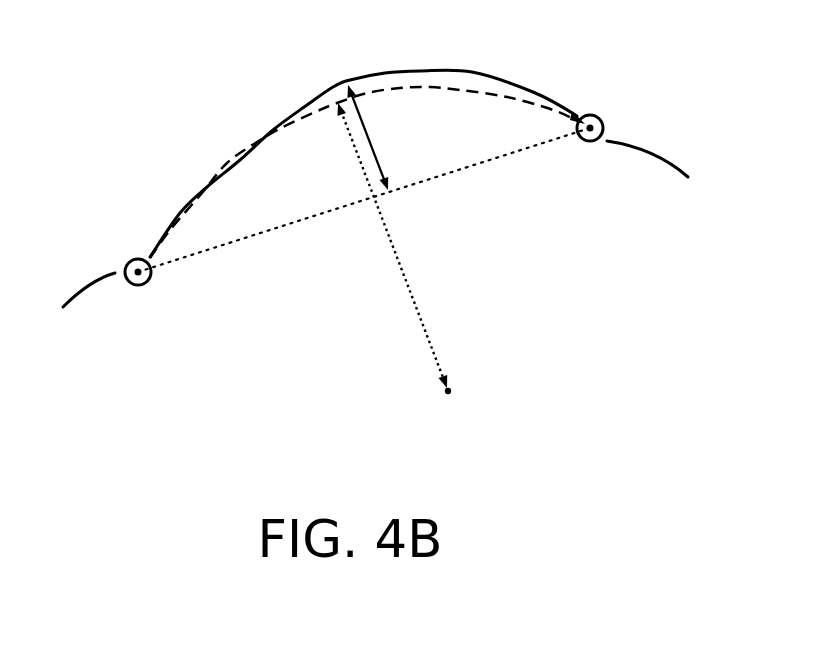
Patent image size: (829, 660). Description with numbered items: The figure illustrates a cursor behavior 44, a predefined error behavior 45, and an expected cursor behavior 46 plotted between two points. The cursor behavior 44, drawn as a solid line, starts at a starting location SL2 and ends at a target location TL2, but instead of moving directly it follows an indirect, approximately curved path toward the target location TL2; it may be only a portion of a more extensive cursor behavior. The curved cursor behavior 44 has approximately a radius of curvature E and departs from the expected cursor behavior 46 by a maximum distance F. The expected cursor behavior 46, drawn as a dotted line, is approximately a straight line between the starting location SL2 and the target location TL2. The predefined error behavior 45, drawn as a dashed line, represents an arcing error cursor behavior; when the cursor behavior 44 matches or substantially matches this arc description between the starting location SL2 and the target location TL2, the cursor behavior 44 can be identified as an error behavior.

The cursor behavior 44 is at (472, 72).
The predefined error behavior 45 is at (228, 155).
The expected cursor behavior 46 is at (315, 218).
The starting location SL2 is at (100, 301).
The target location TL2 is at (640, 164).
The radius of curvature E is at (423, 325).
The maximum distance F is at (382, 165).